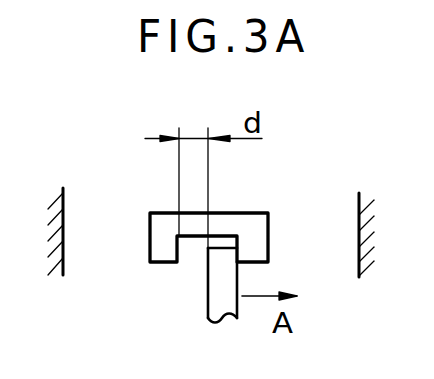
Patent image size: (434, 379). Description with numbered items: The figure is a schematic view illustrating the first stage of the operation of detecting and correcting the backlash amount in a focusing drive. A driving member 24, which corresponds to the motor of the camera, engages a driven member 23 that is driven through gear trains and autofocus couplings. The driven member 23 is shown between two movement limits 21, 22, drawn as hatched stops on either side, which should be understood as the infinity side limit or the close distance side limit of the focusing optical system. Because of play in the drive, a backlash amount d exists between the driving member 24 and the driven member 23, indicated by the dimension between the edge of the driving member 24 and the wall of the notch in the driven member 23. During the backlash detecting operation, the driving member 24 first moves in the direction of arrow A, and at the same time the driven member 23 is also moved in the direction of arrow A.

The movement limit 21 is at (62, 205).
The movement limit 22 is at (360, 198).
The driven member 23 is at (155, 218).
The driving member 24 is at (208, 302).